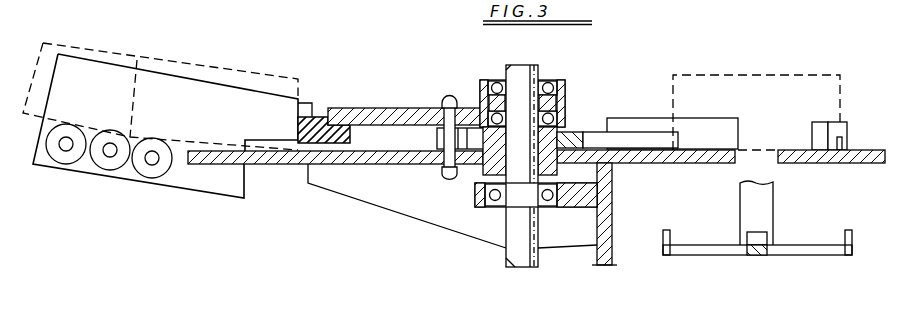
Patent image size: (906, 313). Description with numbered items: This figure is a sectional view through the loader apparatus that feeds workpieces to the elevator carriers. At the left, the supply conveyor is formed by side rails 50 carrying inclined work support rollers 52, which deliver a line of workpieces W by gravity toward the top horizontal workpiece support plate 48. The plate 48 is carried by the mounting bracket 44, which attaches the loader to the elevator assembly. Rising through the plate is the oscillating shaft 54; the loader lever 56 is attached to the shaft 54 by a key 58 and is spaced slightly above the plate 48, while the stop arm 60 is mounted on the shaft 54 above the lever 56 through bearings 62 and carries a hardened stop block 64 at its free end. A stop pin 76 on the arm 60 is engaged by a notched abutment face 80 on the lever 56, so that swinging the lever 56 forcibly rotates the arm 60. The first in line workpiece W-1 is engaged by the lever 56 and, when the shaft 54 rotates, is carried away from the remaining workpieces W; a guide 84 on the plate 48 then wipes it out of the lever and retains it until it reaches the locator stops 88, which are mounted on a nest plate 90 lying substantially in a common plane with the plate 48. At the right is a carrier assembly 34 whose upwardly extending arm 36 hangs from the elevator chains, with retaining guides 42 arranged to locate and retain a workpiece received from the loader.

The carrier assembly 34 is at (795, 257).
The upwardly extending arm 36 is at (762, 198).
The retaining guide 42 is at (668, 240).
The mounting bracket 44 is at (612, 227).
The top horizontal workpiece support plate 48 is at (660, 153).
The side rail 50 is at (217, 183).
The work support roller 52 is at (148, 168).
The oscillating shaft 54 is at (520, 258).
The loader lever 56 is at (623, 140).
The key 58 is at (542, 150).
The stop arm 60 is at (392, 112).
The bearing 62 is at (481, 107).
The hardened stop block 64 is at (317, 120).
The stop pin 76 is at (443, 104).
The notched abutment face 80 is at (467, 150).
The guide 84 is at (705, 127).
The locator stop 88 is at (818, 130).
The nest plate 90 is at (843, 160).
The workpiece W is at (100, 47).
The first in line workpiece W-1 is at (747, 73).